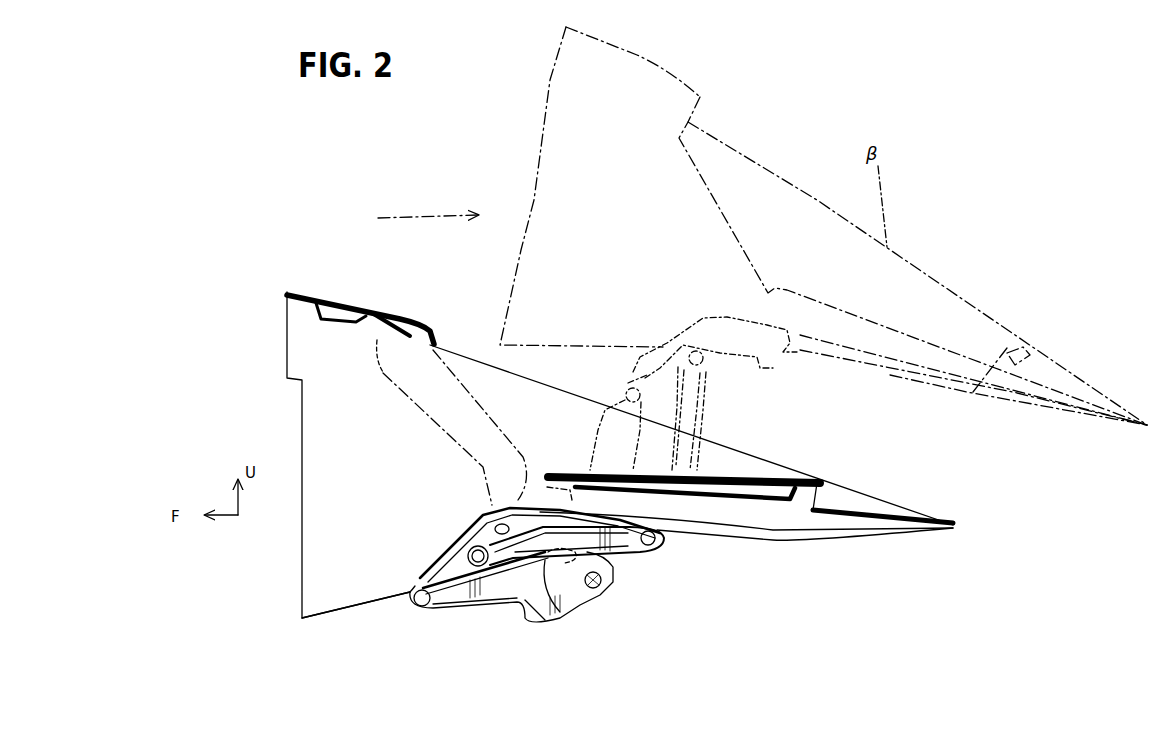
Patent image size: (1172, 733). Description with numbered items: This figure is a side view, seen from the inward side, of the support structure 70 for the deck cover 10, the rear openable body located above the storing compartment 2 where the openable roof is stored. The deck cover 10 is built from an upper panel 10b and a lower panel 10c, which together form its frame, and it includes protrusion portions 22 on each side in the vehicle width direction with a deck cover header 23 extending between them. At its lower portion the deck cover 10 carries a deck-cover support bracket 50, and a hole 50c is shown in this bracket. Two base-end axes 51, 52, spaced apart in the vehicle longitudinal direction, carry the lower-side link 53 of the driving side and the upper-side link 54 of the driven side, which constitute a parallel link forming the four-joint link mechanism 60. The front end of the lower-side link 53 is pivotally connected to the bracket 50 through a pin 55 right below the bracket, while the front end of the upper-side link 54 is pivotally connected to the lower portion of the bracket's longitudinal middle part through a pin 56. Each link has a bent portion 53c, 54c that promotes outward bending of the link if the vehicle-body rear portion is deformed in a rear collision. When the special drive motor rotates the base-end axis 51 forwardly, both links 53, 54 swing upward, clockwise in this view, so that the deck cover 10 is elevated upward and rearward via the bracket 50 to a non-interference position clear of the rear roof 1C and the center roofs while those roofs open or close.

The deck cover 10 is at (367, 283).
The upper panel 10b is at (320, 312).
The lower panel 10c is at (330, 332).
The rear roof 1C is at (485, 408).
The storing compartment 2 is at (740, 601).
The protrusion portion 22 is at (598, 400).
The deck cover header 23 is at (316, 300).
The deck-cover support bracket 50 is at (487, 517).
The hole of upper link 50c is at (510, 497).
The base-end axis 51 is at (595, 594).
The base-end axis 52 is at (653, 548).
The lower-side link 53 is at (498, 594).
The bent portion 53c is at (448, 612).
The upper-side link 54 is at (570, 526).
The bent portion 54c is at (552, 600).
The pin 55 is at (415, 607).
The pin 56 is at (468, 549).
The four-joint link mechanism 60 is at (527, 630).
The support structure 70 is at (411, 668).